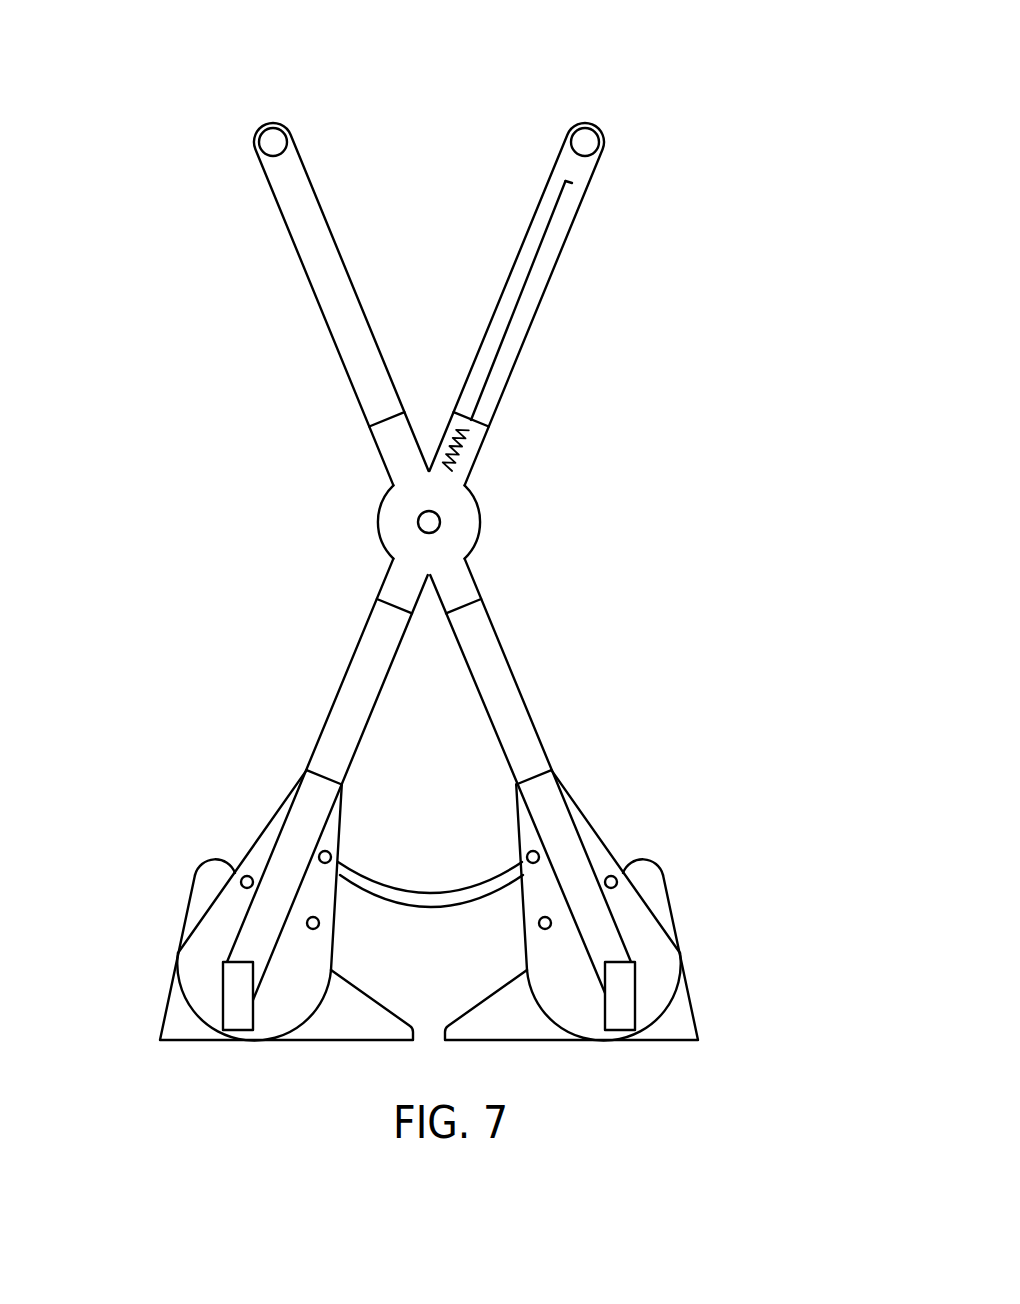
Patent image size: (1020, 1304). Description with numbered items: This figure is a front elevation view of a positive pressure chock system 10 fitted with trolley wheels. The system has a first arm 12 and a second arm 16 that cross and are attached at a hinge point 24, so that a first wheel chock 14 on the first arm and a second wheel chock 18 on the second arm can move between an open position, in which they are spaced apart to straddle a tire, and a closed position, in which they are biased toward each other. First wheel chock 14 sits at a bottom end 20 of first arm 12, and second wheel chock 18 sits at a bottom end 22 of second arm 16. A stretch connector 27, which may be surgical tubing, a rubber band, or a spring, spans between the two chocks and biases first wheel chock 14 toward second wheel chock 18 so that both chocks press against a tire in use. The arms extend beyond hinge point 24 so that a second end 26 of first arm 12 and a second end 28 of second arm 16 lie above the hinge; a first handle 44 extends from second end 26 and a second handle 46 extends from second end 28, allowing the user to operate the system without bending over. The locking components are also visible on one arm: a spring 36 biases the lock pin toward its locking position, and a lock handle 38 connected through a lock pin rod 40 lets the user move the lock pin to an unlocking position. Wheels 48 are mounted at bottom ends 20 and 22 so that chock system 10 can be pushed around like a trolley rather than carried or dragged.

The positive pressure chock system 10 is at (759, 76).
The first arm 12 is at (348, 668).
The first wheel chock 14 is at (198, 893).
The second arm 16 is at (522, 688).
The second wheel chock 18 is at (692, 1018).
The bottom end 20 is at (223, 975).
The bottom end 22 is at (648, 1013).
The hinge point 24 is at (427, 521).
The second end 26 is at (593, 121).
The stretch connector 27 is at (429, 907).
The second end 28 is at (272, 122).
The spring 36 is at (465, 460).
The lock handle 38 is at (572, 183).
The lock pin rod 40 is at (519, 300).
The first handle 44 is at (583, 143).
The second handle 46 is at (268, 143).
The wheels 48 is at (238, 1020).